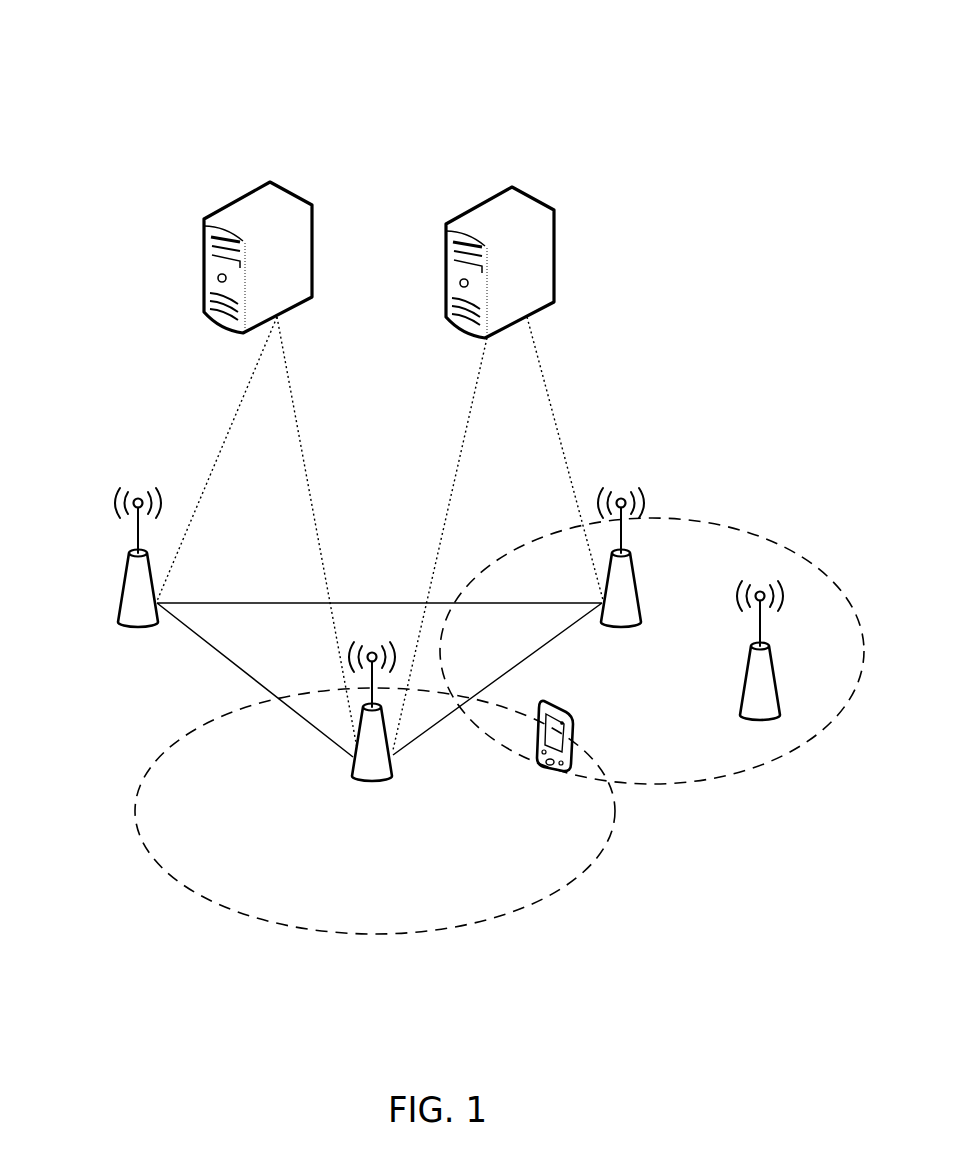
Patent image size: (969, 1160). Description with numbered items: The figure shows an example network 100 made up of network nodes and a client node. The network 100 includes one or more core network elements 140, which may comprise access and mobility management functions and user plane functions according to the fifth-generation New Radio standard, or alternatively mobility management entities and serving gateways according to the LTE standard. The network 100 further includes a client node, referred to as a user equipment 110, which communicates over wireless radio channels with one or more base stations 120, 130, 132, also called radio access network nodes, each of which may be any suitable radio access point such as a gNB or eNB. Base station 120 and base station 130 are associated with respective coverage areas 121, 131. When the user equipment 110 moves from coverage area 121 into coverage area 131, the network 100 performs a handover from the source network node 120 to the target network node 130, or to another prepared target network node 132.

The network 100 is at (184, 82).
The user equipment 110 is at (576, 726).
The base station 120 is at (350, 759).
The coverage area 121 is at (172, 742).
The base station 130 is at (635, 567).
The coverage area 131 is at (755, 532).
The base station 132 is at (780, 695).
The core network elements 140 is at (238, 197).